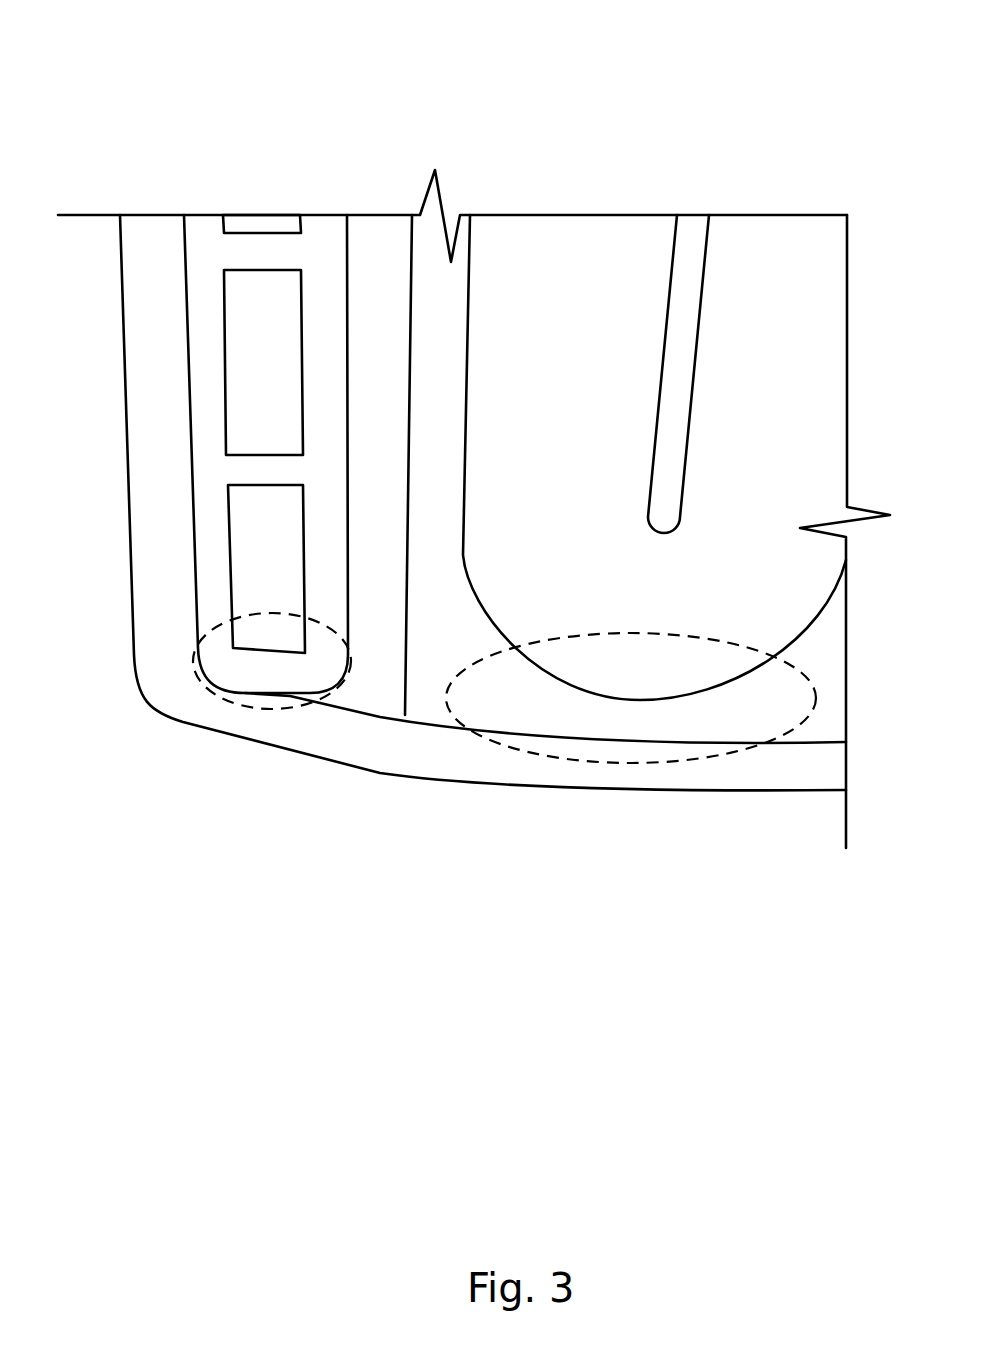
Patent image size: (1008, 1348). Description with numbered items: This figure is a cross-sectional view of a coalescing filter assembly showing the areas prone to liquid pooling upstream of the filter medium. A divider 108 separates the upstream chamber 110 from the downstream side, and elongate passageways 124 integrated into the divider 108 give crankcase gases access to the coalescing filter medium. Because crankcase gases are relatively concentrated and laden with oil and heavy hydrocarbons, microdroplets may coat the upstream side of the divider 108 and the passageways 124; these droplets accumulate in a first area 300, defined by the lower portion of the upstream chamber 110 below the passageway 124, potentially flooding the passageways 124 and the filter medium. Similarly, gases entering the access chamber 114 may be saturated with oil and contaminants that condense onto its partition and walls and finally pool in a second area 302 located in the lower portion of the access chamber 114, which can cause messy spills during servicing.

The upstream chamber 110 is at (166, 91).
The divider 108 is at (606, 243).
The access chamber 114 is at (261, 300).
The passageway 124 is at (691, 235).
The first area 300 is at (650, 763).
The second area 302 is at (292, 708).